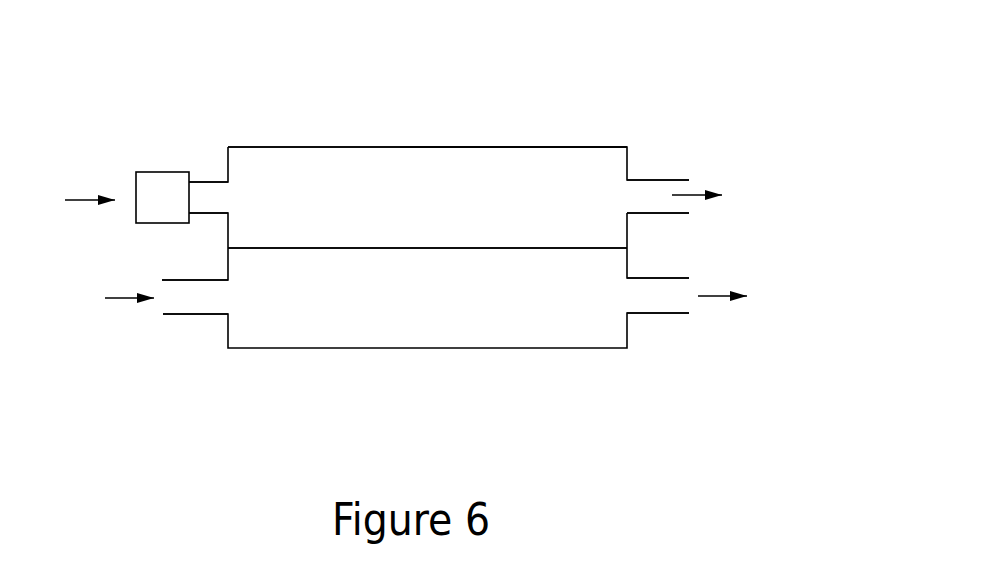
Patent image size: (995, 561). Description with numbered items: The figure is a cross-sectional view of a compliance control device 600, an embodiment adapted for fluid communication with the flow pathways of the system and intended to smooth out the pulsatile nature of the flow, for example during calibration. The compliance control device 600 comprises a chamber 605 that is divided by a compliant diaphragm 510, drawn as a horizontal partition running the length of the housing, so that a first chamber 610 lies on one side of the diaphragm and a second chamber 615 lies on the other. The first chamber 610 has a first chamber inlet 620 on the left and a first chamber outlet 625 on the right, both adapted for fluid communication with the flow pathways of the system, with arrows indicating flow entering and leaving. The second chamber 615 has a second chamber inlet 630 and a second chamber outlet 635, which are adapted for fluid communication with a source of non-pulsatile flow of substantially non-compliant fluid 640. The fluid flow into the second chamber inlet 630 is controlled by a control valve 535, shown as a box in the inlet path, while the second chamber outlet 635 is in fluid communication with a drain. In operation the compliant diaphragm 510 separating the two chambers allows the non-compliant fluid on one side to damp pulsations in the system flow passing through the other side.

The compliance control device 600 is at (252, 103).
The chamber 605 is at (323, 147).
The substantially non-compliant fluid 640 is at (495, 158).
The first chamber 610 is at (433, 215).
The second chamber 615 is at (434, 315).
The compliant diaphragm 510 is at (533, 248).
The control valve 535 is at (182, 197).
The second chamber inlet 630 is at (90, 185).
The first chamber inlet 620 is at (166, 307).
The second chamber outlet 635 is at (674, 185).
The first chamber outlet 625 is at (687, 311).